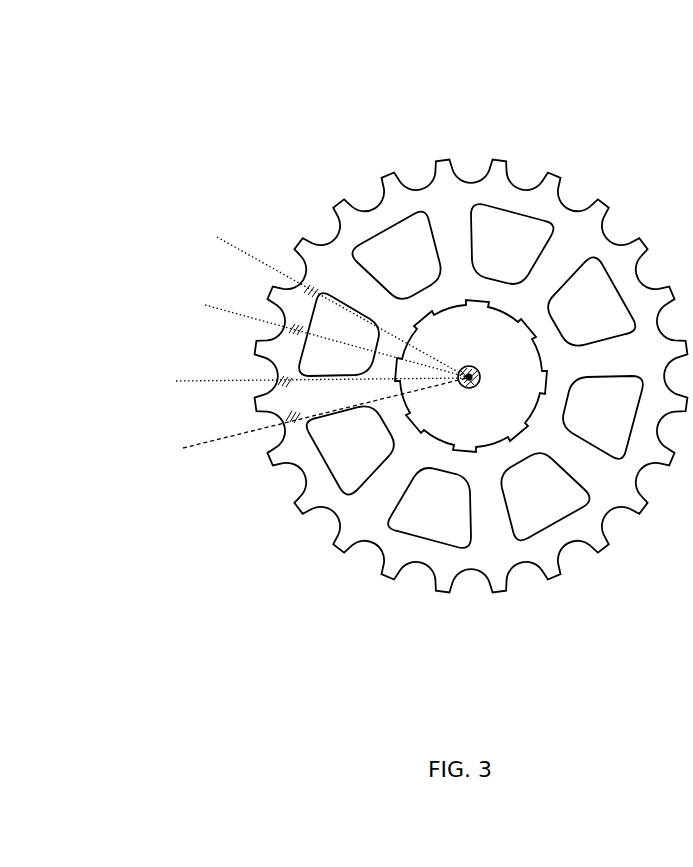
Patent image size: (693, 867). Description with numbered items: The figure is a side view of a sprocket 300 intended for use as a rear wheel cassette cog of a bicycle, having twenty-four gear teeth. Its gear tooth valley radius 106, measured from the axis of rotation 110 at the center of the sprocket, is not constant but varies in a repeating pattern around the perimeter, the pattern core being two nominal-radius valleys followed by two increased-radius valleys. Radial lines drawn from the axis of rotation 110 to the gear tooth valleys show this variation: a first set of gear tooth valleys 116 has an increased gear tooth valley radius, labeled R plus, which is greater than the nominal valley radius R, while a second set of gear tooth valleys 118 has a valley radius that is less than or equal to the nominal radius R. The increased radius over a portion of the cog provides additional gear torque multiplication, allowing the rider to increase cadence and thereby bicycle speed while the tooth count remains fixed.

The sprocket 300 is at (324, 122).
The gear tooth valley radius 106 is at (307, 418).
The axis of rotation 110 is at (480, 368).
The second set of gear tooth valleys 118 is at (199, 208).
The first set of gear tooth valleys 116 is at (134, 362).